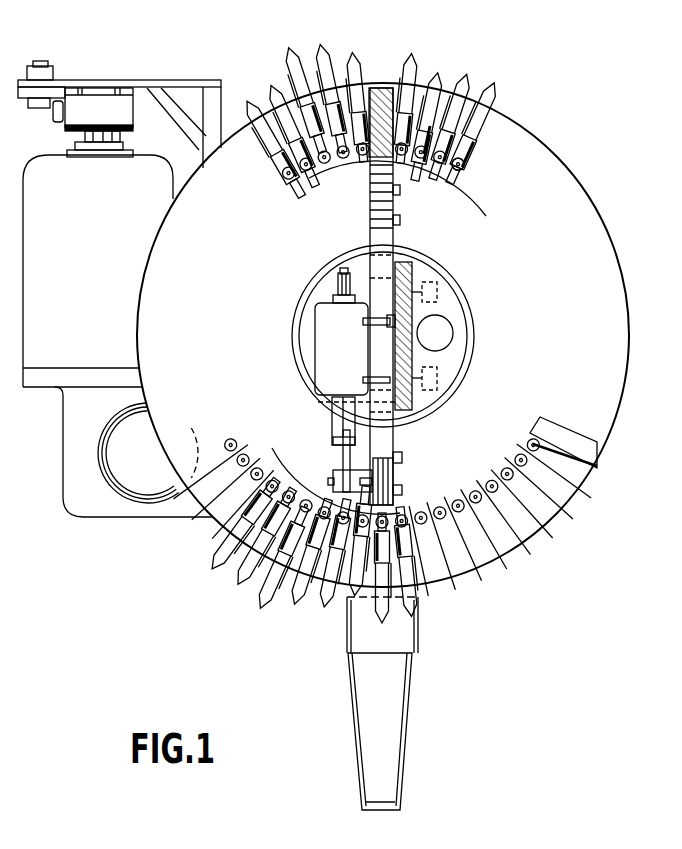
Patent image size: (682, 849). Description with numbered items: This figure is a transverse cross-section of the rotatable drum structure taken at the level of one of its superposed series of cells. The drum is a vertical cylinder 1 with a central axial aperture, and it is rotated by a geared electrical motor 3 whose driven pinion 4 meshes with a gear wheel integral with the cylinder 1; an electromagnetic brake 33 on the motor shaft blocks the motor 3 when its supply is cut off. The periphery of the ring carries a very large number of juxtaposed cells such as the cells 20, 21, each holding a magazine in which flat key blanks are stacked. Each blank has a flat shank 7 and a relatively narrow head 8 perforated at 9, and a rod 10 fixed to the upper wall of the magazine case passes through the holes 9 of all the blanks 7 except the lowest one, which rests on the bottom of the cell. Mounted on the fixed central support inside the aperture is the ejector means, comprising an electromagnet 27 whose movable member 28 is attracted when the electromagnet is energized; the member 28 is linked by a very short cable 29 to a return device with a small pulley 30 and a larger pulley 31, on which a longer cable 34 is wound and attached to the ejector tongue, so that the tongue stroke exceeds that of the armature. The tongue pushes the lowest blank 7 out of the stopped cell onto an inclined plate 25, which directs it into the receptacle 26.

The vertical cylinder 1 is at (583, 183).
The geared electrical motor 3 is at (140, 173).
The driven pinion 4 is at (135, 501).
The flat shank 7 is at (437, 73).
The needle latch 8 is at (428, 123).
The perforation of the blank head 9 is at (466, 160).
The rod 10 is at (423, 172).
The cell 20 is at (372, 596).
The cell 21 is at (418, 590).
The inclined plate 25 is at (410, 637).
The receptacle 26 is at (398, 743).
The electromagnet 27 is at (323, 350).
The movable member 28 is at (340, 406).
The short cable 29 is at (342, 457).
The small pulley 30 is at (338, 490).
The larger pulley 31 is at (400, 458).
The electromagnetic brake 33 is at (127, 103).
The longer cable 34 is at (397, 490).